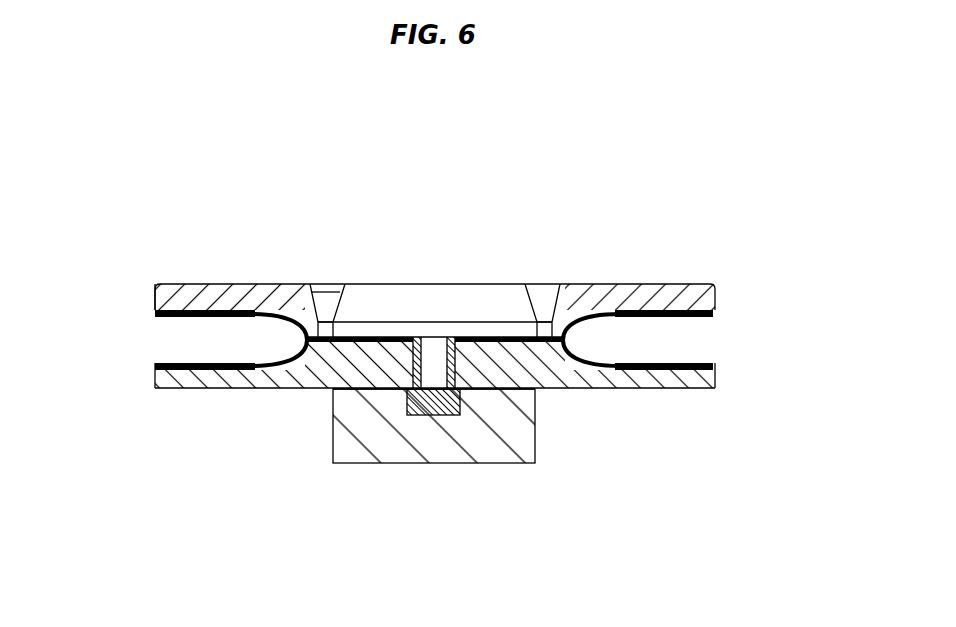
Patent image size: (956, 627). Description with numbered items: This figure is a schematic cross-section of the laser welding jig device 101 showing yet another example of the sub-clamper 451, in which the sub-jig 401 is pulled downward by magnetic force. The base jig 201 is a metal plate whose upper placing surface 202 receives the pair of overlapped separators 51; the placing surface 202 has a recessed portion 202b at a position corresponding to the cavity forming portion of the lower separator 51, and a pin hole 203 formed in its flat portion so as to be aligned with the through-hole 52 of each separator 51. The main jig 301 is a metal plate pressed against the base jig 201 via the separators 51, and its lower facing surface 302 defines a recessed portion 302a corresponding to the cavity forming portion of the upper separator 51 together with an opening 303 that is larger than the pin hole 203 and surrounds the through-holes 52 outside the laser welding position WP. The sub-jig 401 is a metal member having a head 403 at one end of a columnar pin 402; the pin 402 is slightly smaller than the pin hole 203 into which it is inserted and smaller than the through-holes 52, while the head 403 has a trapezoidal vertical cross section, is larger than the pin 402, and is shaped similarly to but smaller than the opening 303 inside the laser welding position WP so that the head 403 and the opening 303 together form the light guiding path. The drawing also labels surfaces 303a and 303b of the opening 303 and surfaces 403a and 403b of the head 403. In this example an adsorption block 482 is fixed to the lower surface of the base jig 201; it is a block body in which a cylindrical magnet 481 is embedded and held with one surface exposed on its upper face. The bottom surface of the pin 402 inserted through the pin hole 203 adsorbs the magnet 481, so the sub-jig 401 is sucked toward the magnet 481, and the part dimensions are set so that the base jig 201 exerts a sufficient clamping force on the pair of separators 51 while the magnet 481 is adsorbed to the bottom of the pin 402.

The laser welding jig device 101 is at (693, 135).
The base jig 201 is at (718, 380).
The placing surface 202 is at (187, 365).
The recessed portion 202b is at (173, 363).
The pin hole 203 is at (425, 372).
The main jig 301 is at (724, 290).
The facing surface 302 is at (175, 290).
The recessed portion 302a is at (208, 325).
The opening 303 is at (548, 310).
The protrusion end face 303a is at (313, 285).
The protrusion side face 303b is at (330, 285).
The sub-jig 401 is at (358, 216).
The pin 402 is at (468, 360).
The head 403 is at (503, 333).
The protrusion end face 403a is at (542, 330).
The protrusion side face 403b is at (556, 302).
The sub-clamper 451 is at (298, 431).
The magnet 481 is at (450, 417).
The adsorption block 482 is at (537, 443).
The separator 51 is at (702, 364).
The through-hole 52 is at (481, 337).
The laser welding position WP is at (365, 337).